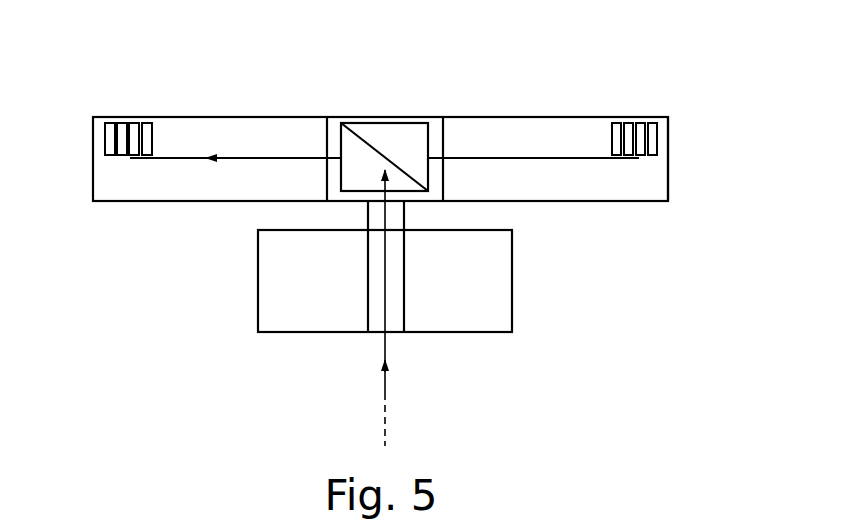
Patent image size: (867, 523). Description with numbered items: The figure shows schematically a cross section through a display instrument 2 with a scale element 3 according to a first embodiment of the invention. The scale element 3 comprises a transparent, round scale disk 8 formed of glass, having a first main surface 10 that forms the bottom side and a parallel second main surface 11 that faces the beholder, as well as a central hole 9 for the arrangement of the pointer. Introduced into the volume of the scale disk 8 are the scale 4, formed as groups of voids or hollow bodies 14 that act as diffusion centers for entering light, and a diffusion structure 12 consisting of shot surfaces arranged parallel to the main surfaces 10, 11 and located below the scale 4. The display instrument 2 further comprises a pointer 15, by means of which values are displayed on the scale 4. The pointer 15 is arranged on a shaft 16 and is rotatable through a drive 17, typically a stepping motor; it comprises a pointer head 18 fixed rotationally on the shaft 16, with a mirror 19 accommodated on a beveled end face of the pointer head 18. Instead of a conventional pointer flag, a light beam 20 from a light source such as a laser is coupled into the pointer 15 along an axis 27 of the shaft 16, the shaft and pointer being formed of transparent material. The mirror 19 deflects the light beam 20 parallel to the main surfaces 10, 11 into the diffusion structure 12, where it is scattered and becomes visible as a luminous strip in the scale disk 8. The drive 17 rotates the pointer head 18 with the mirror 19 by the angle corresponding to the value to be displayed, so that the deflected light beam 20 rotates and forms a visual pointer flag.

The display instrument 2 is at (565, 291).
The scale element 3 is at (579, 96).
The scale 4 is at (378, 114).
The scale disk 8 is at (650, 200).
The central hole 9 is at (437, 128).
The first main surface 10 is at (233, 203).
The second main surface 11 is at (231, 117).
The diffusion structure 12 is at (137, 160).
The hollow bodies 14 is at (150, 118).
The pointer 15 is at (411, 146).
The shaft 16 is at (377, 333).
The drive 17 is at (279, 313).
The pointer head 18 is at (363, 128).
The mirror 19 is at (409, 203).
The light beam 20 is at (385, 373).
The axis 27 is at (385, 423).